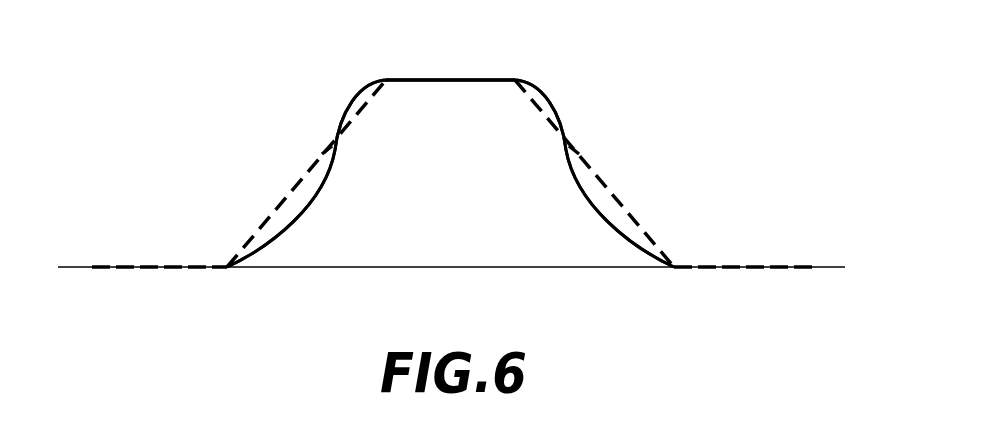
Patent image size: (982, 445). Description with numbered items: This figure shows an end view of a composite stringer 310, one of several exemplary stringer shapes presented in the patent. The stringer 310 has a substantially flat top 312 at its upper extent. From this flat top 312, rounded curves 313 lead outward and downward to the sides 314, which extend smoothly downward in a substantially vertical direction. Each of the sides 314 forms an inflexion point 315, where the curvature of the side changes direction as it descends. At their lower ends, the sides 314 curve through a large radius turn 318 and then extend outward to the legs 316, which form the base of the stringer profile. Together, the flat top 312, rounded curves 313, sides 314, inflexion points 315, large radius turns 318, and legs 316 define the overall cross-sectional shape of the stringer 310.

The stringer 310 is at (222, 45).
The substantially flat top 312 is at (482, 80).
The rounded curves 313 is at (356, 95).
The sides 314 is at (298, 199).
The inflexion point 315 is at (320, 155).
The legs 316 is at (140, 266).
The large radius turn 318 is at (289, 230).